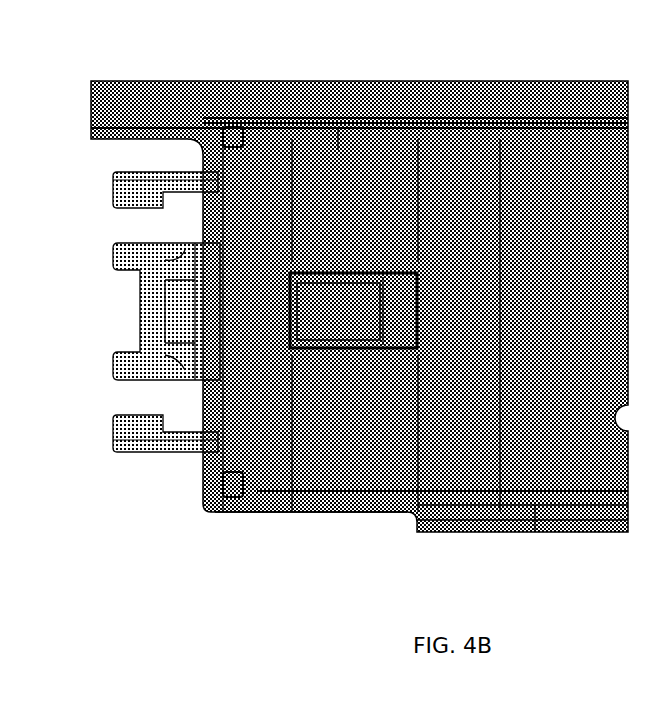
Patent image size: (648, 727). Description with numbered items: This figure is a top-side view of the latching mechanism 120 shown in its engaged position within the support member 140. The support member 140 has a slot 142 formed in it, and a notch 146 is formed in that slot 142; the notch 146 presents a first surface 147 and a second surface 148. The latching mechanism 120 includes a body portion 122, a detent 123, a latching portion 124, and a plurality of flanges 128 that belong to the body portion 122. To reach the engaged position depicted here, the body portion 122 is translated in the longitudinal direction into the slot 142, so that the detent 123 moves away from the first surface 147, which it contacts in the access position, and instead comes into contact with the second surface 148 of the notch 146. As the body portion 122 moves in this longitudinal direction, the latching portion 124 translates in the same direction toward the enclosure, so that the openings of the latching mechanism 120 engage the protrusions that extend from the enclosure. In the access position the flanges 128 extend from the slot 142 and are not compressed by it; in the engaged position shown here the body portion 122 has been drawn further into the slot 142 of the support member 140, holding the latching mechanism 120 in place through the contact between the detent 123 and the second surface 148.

The latching mechanism 120 is at (102, 208).
The body portion 122 is at (272, 513).
The detent 123 is at (500, 535).
The latching portion 124 is at (138, 313).
The plurality of flanges 128 is at (115, 451).
The support member 140 is at (333, 105).
The slot 142 is at (150, 100).
The notch 146 is at (443, 100).
The first surface 147 is at (228, 96).
The second surface 148 is at (511, 100).